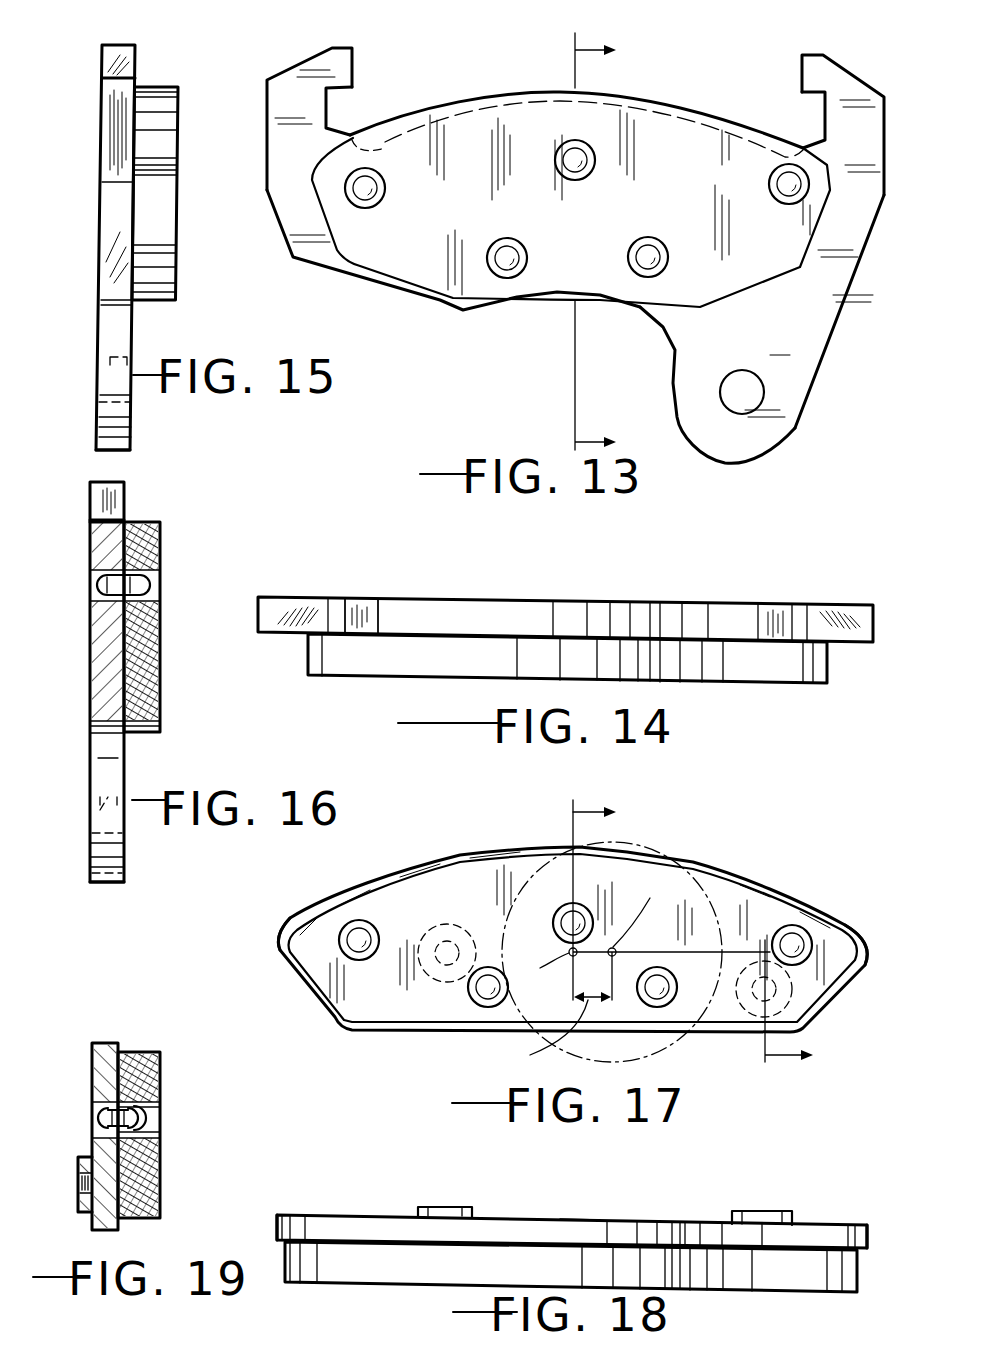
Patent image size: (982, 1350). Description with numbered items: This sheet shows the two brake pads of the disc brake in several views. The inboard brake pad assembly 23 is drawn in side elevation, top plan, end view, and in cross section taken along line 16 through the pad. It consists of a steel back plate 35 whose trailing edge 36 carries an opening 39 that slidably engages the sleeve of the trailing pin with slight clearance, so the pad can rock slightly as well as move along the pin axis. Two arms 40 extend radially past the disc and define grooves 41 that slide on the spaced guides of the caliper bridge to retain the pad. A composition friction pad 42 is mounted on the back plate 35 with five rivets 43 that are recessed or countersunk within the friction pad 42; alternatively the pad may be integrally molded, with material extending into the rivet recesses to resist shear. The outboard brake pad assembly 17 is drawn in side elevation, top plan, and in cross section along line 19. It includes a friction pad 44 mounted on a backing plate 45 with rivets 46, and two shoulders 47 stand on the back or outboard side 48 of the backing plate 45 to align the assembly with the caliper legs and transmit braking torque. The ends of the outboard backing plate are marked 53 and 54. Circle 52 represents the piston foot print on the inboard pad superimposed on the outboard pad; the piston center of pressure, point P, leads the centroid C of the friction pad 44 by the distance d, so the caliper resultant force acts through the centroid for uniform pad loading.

In FIG. 17, the outboard brake pad assembly 17 is at (738, 862).
In FIG. 13, the inboard brake pad assembly 23 is at (520, 315).
In FIG. 15, the inboard brake pad assembly 23 is at (88, 230).
In FIG. 16, the inboard brake pad assembly 23 is at (138, 753).
In FIG. 14, the inboard brake pad assembly 23 is at (510, 588).
In FIG. 13, the back plate 35 is at (687, 335).
In FIG. 14, the back plate 35 is at (600, 617).
In FIG. 13, the trailing edge 36 is at (822, 377).
In FIG. 15, the trailing edge 36 is at (107, 378).
In FIG. 16, the trailing edge 36 is at (115, 876).
In FIG. 13, the opening 39 is at (748, 378).
In FIG. 15, the opening 39 is at (135, 352).
In FIG. 16, the opening 39 is at (98, 800).
In FIG. 13, the arms 40 is at (294, 68).
In FIG. 15, the arms 40 is at (118, 43).
In FIG. 16, the arms 40 is at (105, 482).
In FIG. 14, the arms 40 is at (292, 603).
In FIG. 13, the grooves 41 is at (331, 118).
In FIG. 16, the grooves 41 is at (92, 525).
In FIG. 13, the friction pad 42 is at (777, 247).
In FIG. 15, the friction pad 42 is at (155, 193).
In FIG. 16, the friction pad 42 is at (161, 650).
In FIG. 14, the friction pad 42 is at (762, 663).
In FIG. 13, the rivets 43 is at (495, 245).
In FIG. 16, the rivets 43 is at (130, 578).
In FIG. 17, the friction pad 44 is at (573, 938).
In FIG. 18, the friction pad 44 is at (357, 1255).
In FIG. 19, the friction pad 44 is at (163, 1058).
In FIG. 17, the backing plate 45 is at (565, 927).
In FIG. 18, the backing plate 45 is at (335, 1222).
In FIG. 19, the backing plate 45 is at (92, 1063).
In FIG. 17, the rivets 46 is at (347, 955).
In FIG. 19, the rivets 46 is at (143, 1125).
In FIG. 17, the shoulders 47 is at (453, 930).
In FIG. 18, the shoulders 47 is at (450, 1207).
In FIG. 18, the outboard side 48 is at (577, 1218).
In FIG. 17, the circle 52 is at (673, 1047).
In FIG. 17, the end of backing plate 53 is at (282, 953).
In FIG. 18, the end of backing plate 53 is at (275, 1228).
In FIG. 17, the end of backing plate 54 is at (870, 950).
In FIG. 18, the end of backing plate 54 is at (863, 1240).
In FIG. 13, the caliper 16 is at (620, 246).
In FIG. 17, the section line 19- 19 is at (715, 934).